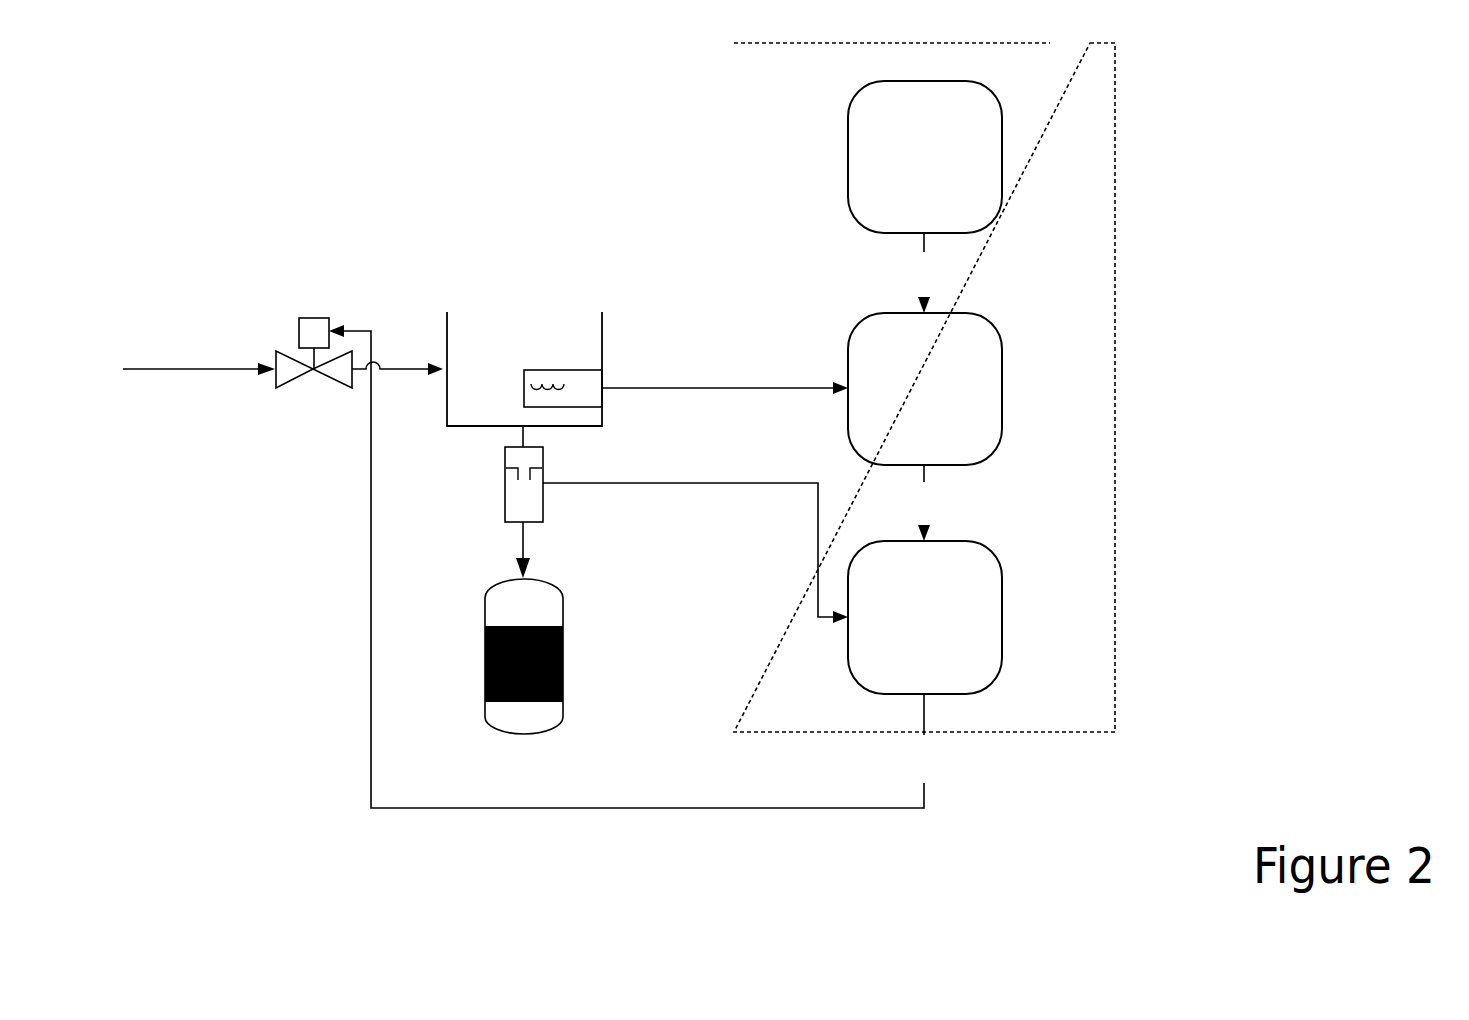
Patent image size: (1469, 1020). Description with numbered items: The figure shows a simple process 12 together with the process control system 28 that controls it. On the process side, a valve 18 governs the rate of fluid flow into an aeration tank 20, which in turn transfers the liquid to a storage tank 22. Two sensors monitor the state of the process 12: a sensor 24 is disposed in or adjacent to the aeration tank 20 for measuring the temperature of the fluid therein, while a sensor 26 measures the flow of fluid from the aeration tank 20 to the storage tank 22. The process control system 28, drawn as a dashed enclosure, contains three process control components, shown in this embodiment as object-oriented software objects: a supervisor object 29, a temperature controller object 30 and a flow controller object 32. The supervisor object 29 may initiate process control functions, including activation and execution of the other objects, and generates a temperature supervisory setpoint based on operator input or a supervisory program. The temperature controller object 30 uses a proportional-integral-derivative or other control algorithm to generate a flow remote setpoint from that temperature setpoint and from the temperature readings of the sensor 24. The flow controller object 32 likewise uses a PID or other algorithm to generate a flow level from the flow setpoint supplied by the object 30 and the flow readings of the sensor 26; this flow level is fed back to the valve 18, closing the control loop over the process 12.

The process 12 is at (268, 243).
The valve 18 is at (295, 390).
The aeration tank 20 is at (462, 438).
The storage tank 22 is at (483, 638).
The sensor 24 is at (542, 368).
The sensor 26 is at (503, 503).
The process control system 28 is at (1115, 195).
The supervisor object 29 is at (993, 100).
The temperature controller object 30 is at (1002, 330).
The flow controller object 32 is at (1020, 548).